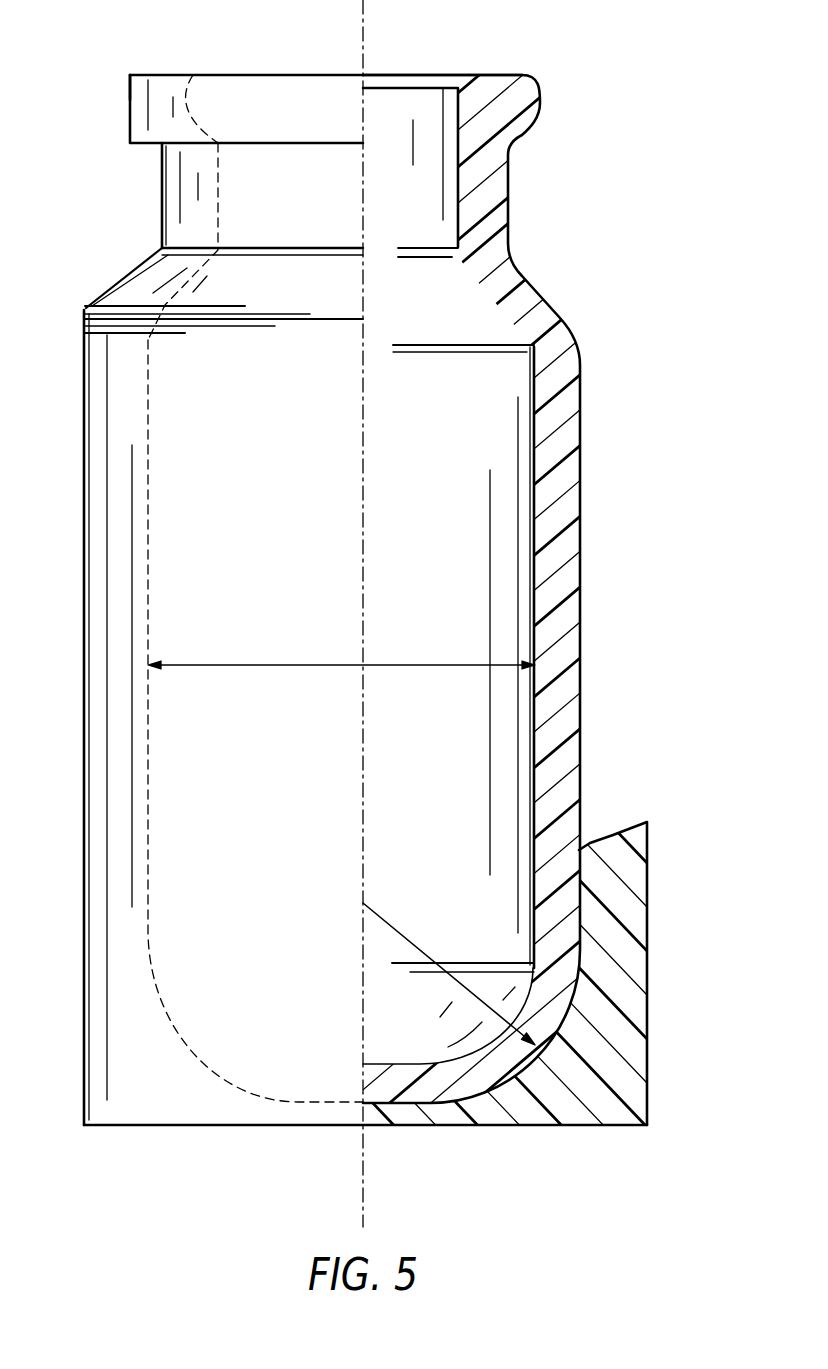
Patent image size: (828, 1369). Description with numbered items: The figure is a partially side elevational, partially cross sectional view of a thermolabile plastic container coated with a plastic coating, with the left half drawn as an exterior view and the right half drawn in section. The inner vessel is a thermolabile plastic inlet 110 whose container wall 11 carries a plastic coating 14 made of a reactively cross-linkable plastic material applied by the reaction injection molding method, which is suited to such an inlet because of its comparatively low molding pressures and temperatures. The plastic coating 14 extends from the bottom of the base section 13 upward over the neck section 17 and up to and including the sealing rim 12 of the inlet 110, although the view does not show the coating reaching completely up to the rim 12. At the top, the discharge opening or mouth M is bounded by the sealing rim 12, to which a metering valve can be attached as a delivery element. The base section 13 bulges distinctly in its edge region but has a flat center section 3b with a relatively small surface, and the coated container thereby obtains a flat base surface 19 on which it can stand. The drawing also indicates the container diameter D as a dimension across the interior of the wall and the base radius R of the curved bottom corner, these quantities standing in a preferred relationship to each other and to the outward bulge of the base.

The thermolabile plastic inlet 110 is at (597, 512).
The container wall 11 is at (572, 404).
The sealing rim 12 is at (540, 108).
The neck section 17 is at (500, 192).
The plastic coating 14 is at (633, 885).
The flat base surface 19 is at (228, 1127).
The base section 13 is at (178, 1056).
The flat center section 3b is at (375, 1077).
The container diameter D is at (335, 662).
The base radius R is at (430, 952).
The discharge opening or mouth M is at (152, 32).